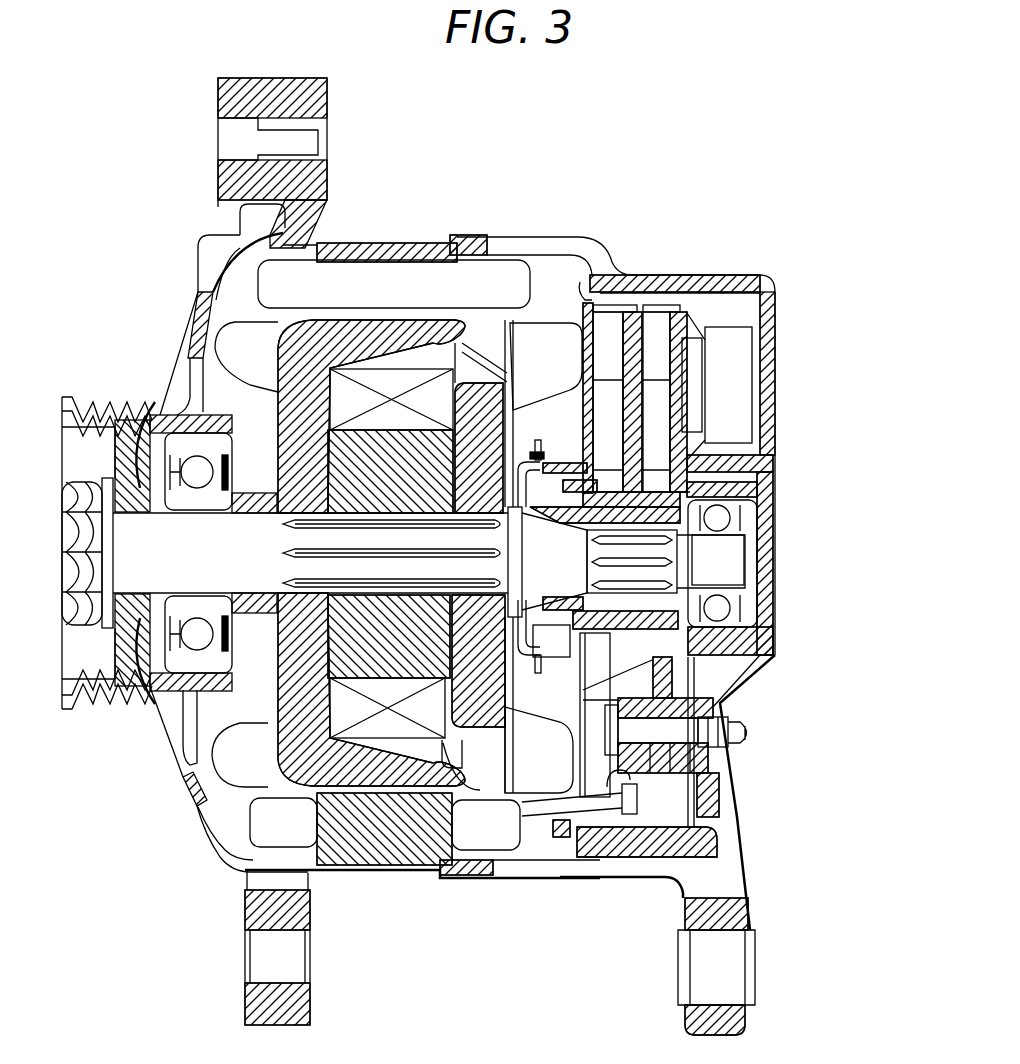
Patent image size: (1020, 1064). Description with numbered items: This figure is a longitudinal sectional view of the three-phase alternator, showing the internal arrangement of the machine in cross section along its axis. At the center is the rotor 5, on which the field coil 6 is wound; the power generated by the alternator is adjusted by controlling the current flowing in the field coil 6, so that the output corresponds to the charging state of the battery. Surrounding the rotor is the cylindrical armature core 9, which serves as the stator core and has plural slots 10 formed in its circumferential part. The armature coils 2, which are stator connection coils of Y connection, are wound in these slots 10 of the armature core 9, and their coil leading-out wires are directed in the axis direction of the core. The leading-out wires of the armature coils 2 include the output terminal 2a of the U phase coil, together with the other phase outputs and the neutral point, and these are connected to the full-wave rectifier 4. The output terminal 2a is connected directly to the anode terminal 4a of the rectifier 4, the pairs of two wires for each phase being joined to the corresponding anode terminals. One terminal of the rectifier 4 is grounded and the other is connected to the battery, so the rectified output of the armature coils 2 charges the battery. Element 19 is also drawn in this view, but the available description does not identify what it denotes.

The armature coils 2 is at (478, 838).
The output terminal 2a is at (557, 830).
The full-wave rectifier 4 is at (660, 753).
The anode terminal 4a is at (640, 798).
The rotor 5 is at (280, 760).
The field coil 6 is at (362, 773).
The armature core 9 is at (412, 857).
The slots 10 is at (380, 313).
The screw 19 is at (637, 808).